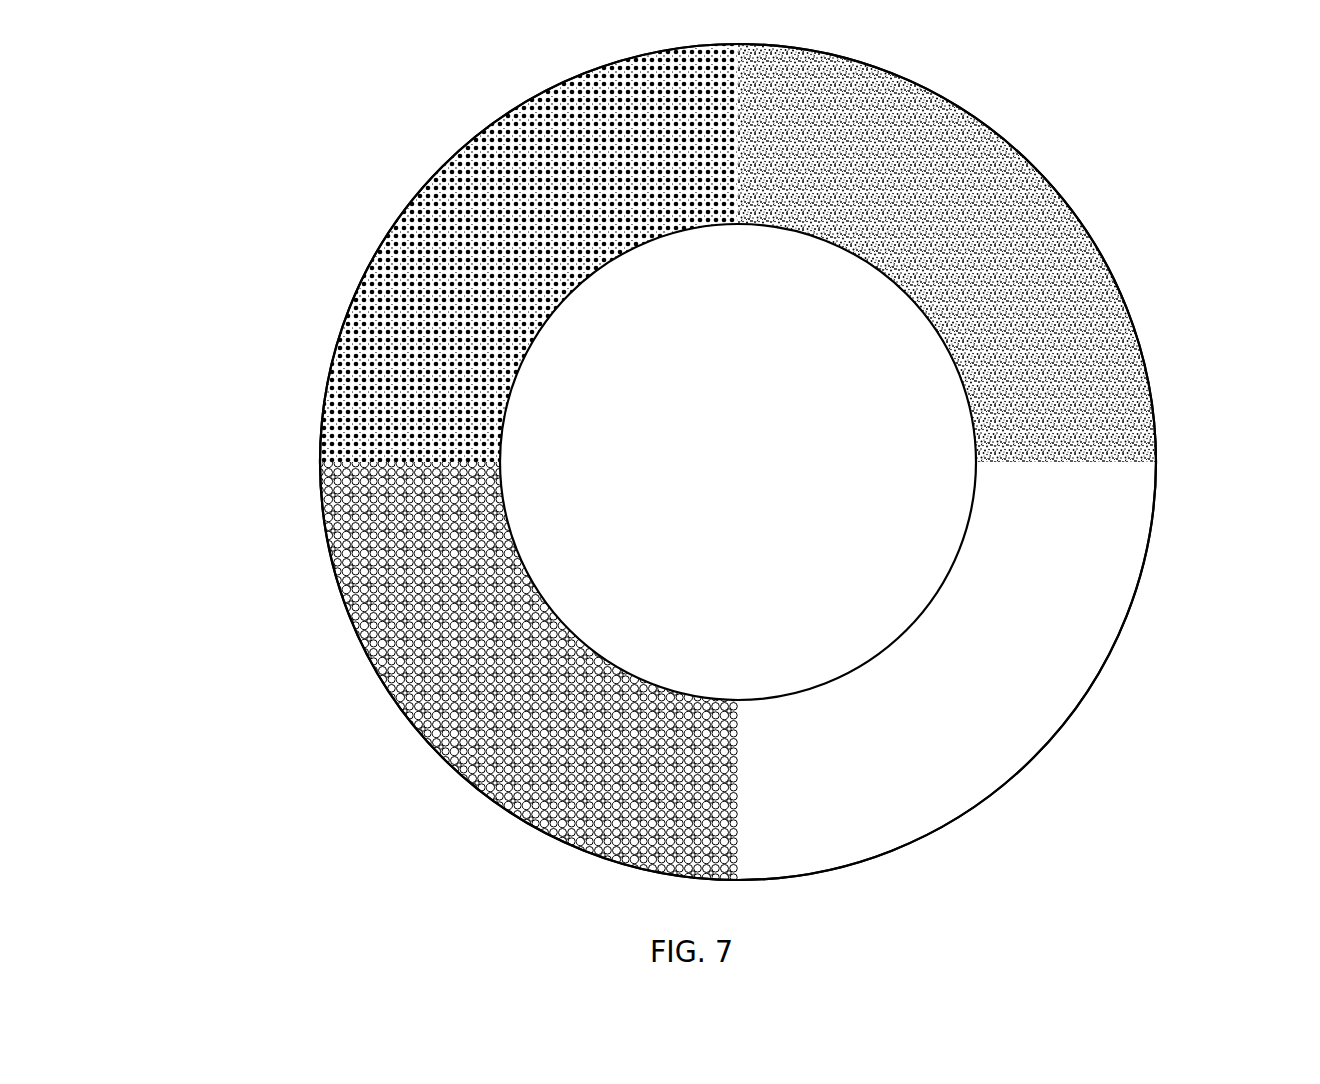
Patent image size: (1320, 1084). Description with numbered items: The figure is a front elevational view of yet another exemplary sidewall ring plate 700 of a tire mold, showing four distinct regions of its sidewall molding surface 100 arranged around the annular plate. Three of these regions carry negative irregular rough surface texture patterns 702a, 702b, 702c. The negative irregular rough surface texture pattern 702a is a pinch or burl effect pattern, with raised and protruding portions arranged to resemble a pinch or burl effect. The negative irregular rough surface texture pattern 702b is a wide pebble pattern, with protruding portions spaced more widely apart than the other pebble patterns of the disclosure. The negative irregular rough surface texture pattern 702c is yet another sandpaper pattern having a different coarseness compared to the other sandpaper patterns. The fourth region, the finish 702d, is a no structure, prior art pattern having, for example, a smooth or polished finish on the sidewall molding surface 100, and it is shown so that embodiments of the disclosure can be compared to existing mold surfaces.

The sidewall molding surface 100 is at (865, 99).
The sidewall ring plate 700 is at (1158, 334).
The negative irregular rough surface texture pattern 702a is at (357, 298).
The negative irregular rough surface texture pattern 702b is at (405, 734).
The negative irregular rough surface texture pattern 702c is at (1072, 287).
The finish 702d is at (962, 790).